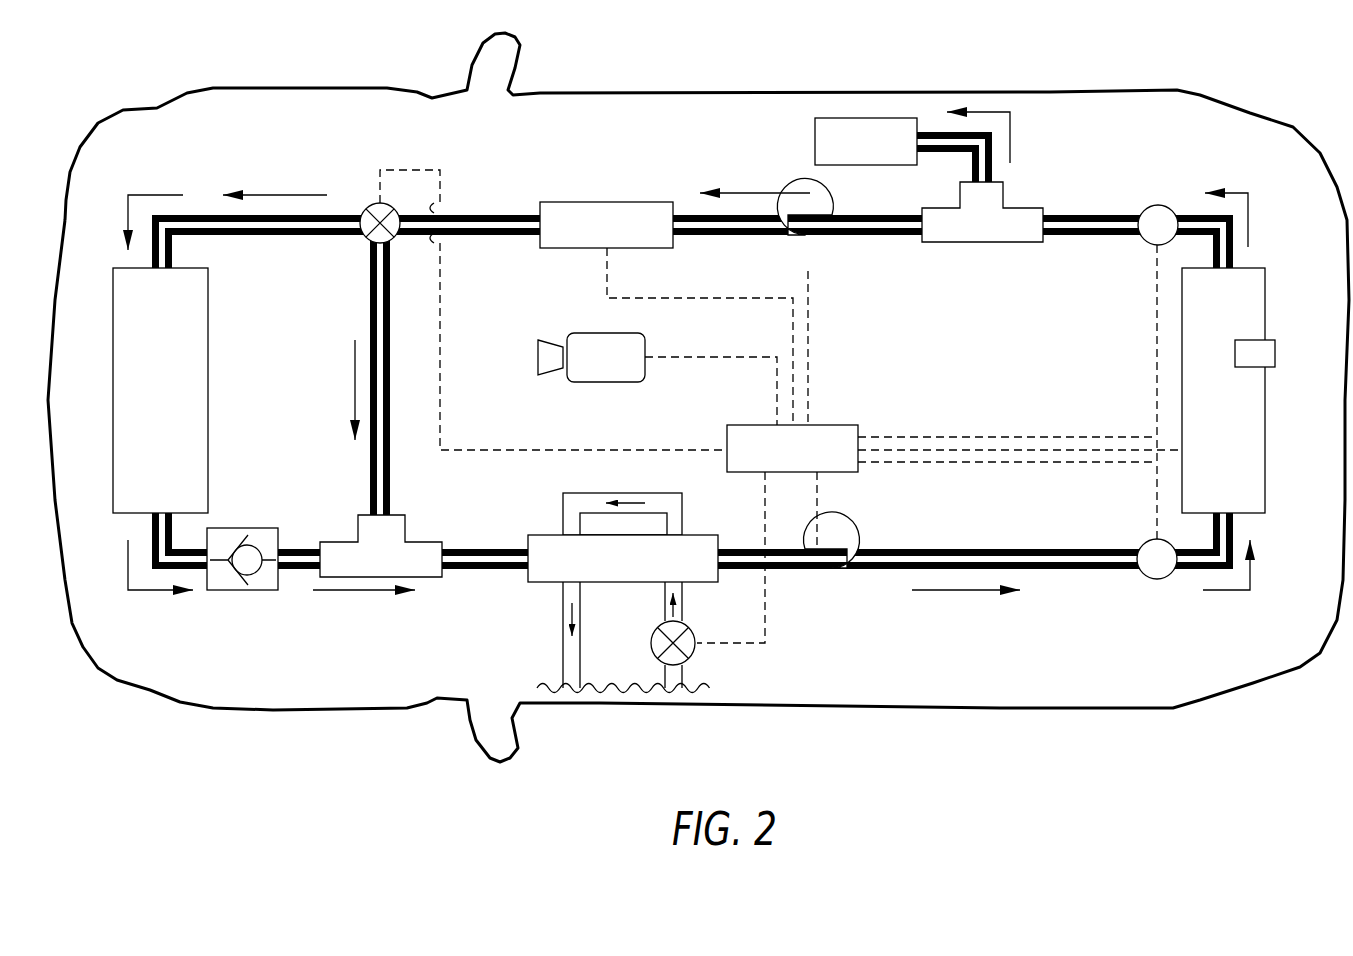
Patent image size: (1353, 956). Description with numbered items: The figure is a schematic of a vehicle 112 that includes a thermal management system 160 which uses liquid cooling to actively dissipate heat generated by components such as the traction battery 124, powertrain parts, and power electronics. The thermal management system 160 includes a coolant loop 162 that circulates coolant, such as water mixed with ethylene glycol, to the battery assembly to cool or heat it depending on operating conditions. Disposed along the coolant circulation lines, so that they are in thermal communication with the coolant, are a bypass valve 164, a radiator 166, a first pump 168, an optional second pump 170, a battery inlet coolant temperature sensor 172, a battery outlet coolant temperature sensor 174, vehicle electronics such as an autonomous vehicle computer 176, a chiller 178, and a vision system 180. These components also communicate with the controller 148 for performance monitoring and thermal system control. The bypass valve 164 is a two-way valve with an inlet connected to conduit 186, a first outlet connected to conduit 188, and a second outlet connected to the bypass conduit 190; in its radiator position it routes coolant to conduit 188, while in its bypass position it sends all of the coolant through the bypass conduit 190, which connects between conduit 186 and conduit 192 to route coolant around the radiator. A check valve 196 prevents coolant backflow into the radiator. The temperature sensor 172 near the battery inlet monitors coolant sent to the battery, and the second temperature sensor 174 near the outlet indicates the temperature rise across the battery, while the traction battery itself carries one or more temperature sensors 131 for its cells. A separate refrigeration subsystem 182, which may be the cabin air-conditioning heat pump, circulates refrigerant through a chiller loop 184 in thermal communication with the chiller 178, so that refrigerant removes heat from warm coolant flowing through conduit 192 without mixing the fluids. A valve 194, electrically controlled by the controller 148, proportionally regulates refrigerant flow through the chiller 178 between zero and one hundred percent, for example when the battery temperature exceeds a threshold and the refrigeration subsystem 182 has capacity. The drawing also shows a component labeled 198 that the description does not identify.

The vehicle 112 is at (1075, 90).
The traction battery 124 is at (1223, 390).
The temperature sensor 131 is at (1278, 350).
The controller 148 is at (792, 448).
The thermal management system 160 is at (283, 150).
The coolant loop 162 is at (948, 535).
The bypass valve 164 is at (368, 208).
The radiator 166 is at (160, 390).
The first pump 168 is at (825, 603).
The second pump 170 is at (847, 268).
The battery inlet coolant temperature sensor 172 is at (1147, 578).
The battery outlet coolant temperature sensor 174 is at (1152, 205).
The autonomous vehicle computer 176 is at (606, 225).
The chiller 178 is at (623, 537).
The vision system 180 is at (591, 357).
The refrigeration subsystem 182 is at (598, 637).
The chiller loop 184 is at (563, 597).
The conduit 186 is at (487, 217).
The conduit 188 is at (240, 236).
The bypass conduit 190 is at (370, 298).
The conduit 192 is at (470, 572).
The valve 194 is at (688, 627).
The check valve 196 is at (262, 528).
The coolant reservoir 198 is at (898, 150).